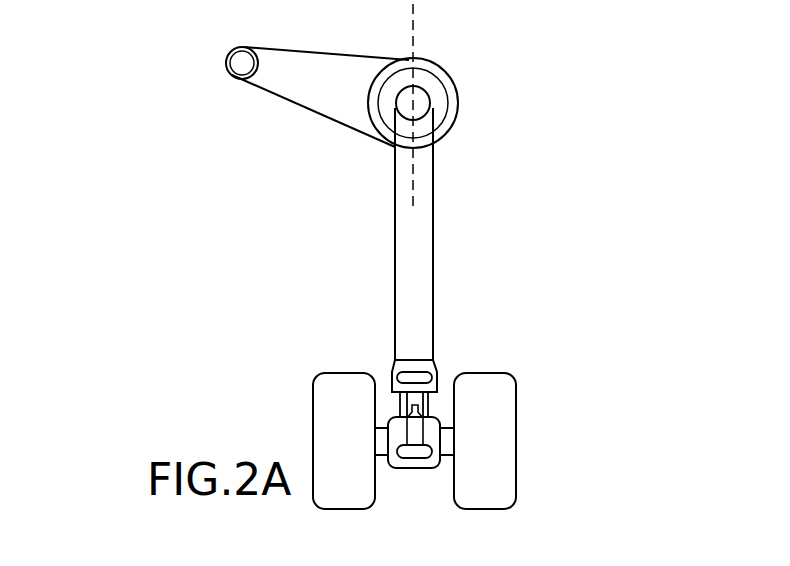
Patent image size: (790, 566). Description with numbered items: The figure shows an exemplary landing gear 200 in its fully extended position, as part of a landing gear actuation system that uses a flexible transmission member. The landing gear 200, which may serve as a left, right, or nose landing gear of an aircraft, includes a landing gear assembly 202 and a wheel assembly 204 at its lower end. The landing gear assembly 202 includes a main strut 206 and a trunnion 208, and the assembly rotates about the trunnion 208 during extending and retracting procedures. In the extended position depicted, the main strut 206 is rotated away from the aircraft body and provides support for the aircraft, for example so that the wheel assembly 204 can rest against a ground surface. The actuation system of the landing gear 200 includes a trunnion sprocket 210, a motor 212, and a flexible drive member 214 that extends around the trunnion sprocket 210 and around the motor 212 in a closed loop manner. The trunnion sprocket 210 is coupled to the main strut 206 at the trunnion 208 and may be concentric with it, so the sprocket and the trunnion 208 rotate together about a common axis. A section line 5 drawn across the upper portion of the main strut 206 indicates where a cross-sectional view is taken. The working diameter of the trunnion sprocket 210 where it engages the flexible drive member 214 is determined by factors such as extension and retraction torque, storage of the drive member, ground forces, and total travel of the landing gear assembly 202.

The section line 5- 5 is at (447, 32).
The landing gear 200 is at (112, 120).
The landing gear assembly 202 is at (528, 278).
The wheel assembly 204 is at (555, 435).
The main strut 206 is at (434, 333).
The trunnion 208 is at (421, 100).
The trunnion sprocket 210 is at (453, 78).
The motor 212 is at (227, 72).
The flexible drive member 214 is at (307, 108).